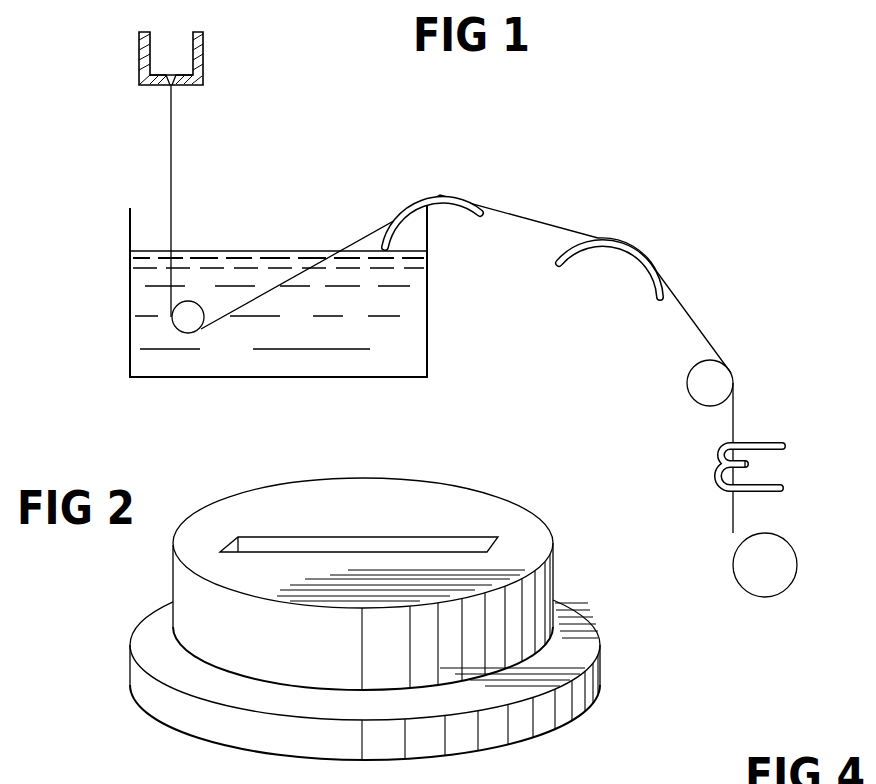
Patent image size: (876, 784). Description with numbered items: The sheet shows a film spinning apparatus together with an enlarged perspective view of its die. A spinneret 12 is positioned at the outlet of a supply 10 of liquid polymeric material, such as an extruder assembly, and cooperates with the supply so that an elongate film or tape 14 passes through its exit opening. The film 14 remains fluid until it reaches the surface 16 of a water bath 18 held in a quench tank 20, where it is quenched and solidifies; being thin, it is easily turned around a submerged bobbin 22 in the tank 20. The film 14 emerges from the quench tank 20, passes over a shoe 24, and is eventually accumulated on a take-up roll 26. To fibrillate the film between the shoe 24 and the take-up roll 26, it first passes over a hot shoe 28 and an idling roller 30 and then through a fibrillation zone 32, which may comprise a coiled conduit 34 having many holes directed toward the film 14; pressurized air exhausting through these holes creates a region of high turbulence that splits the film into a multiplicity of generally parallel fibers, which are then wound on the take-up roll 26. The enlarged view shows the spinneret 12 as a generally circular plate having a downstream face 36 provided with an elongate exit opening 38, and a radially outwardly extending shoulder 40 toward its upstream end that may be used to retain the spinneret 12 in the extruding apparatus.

In FIG. 1, the supply 10 is at (197, 62).
In FIG. 1, the spinneret 12 is at (176, 84).
In FIG. 2, the spinneret 12 is at (133, 668).
In FIG. 1, the film 14 is at (568, 222).
In FIG. 1, the surface 16 is at (197, 250).
In FIG. 1, the water bath 18 is at (305, 342).
In FIG. 1, the quench tank 20 is at (130, 272).
In FIG. 1, the submerged bobbin 22 is at (195, 322).
In FIG. 1, the shoe 24 is at (449, 204).
In FIG. 1, the take-up roll 26 is at (773, 548).
In FIG. 1, the hot shoe 28 is at (652, 290).
In FIG. 1, the idling roller 30 is at (695, 378).
In FIG. 1, the fibrillation zone 32 is at (745, 442).
In FIG. 1, the coiled conduit 34 is at (762, 452).
In FIG. 2, the downstream face 36 is at (250, 497).
In FIG. 2, the elongate exit opening 38 is at (311, 542).
In FIG. 2, the shoulder 40 is at (575, 622).